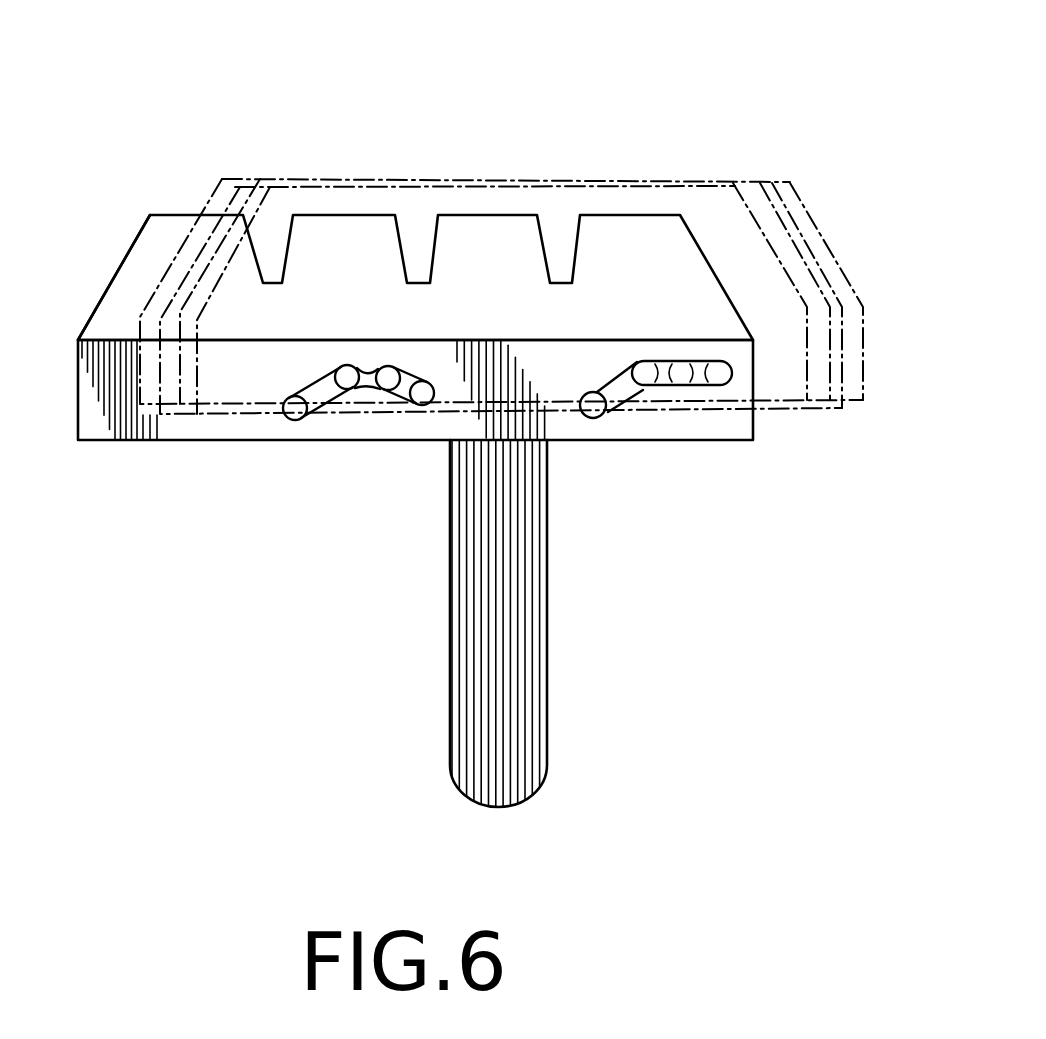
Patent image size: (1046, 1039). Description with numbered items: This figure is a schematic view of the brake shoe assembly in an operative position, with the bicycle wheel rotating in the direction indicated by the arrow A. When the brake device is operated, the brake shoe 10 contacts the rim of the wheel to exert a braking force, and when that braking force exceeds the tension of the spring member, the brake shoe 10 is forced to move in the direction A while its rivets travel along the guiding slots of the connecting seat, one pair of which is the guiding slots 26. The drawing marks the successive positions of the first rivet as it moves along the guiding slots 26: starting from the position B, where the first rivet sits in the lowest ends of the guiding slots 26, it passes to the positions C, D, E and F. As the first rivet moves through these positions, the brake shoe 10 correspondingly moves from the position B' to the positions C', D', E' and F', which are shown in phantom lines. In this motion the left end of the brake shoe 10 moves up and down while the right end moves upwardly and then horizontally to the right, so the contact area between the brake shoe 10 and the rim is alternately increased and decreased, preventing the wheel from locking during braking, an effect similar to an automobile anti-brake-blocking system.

The brake shoe 10 is at (137, 447).
The guiding slots 26 is at (317, 407).
The direction of wheel rotation A is at (575, 79).
The position B of the first rivet B is at (261, 455).
The position C of the first rivet C is at (335, 451).
The position D of the first rivet D is at (380, 454).
The position E of the first rivet E is at (413, 456).
The position F of the first rivet F is at (423, 469).
The position B' of the brake shoe B' is at (101, 253).
The position C' of the brake shoe C' is at (501, 232).
The position D' of the brake shoe D' is at (501, 218).
The position E' of the brake shoe E' is at (247, 213).
The position F' of the brake shoe F' is at (291, 223).